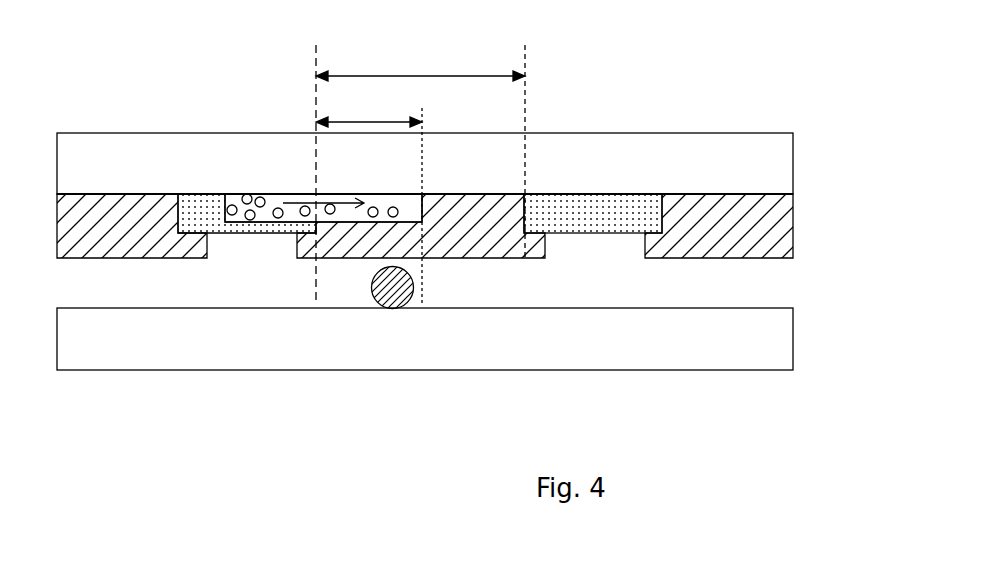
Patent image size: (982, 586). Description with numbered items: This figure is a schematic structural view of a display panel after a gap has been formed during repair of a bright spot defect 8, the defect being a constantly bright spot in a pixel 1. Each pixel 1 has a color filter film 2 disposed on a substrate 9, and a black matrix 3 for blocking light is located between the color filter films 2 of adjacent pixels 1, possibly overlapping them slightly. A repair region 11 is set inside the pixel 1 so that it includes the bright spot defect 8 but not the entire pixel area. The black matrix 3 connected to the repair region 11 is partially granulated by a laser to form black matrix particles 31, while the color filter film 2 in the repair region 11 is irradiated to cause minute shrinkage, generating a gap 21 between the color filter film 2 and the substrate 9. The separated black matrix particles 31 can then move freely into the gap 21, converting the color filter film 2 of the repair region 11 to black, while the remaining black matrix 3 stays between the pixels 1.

The pixel 1 is at (420, 60).
The repair region 11 is at (369, 104).
The color filter film 2 is at (463, 316).
The gap 21 is at (355, 222).
The black matrix 3 is at (620, 217).
The black matrix particles 31 is at (242, 203).
The bright spot defect 8 is at (414, 283).
The substrate 9 is at (773, 162).